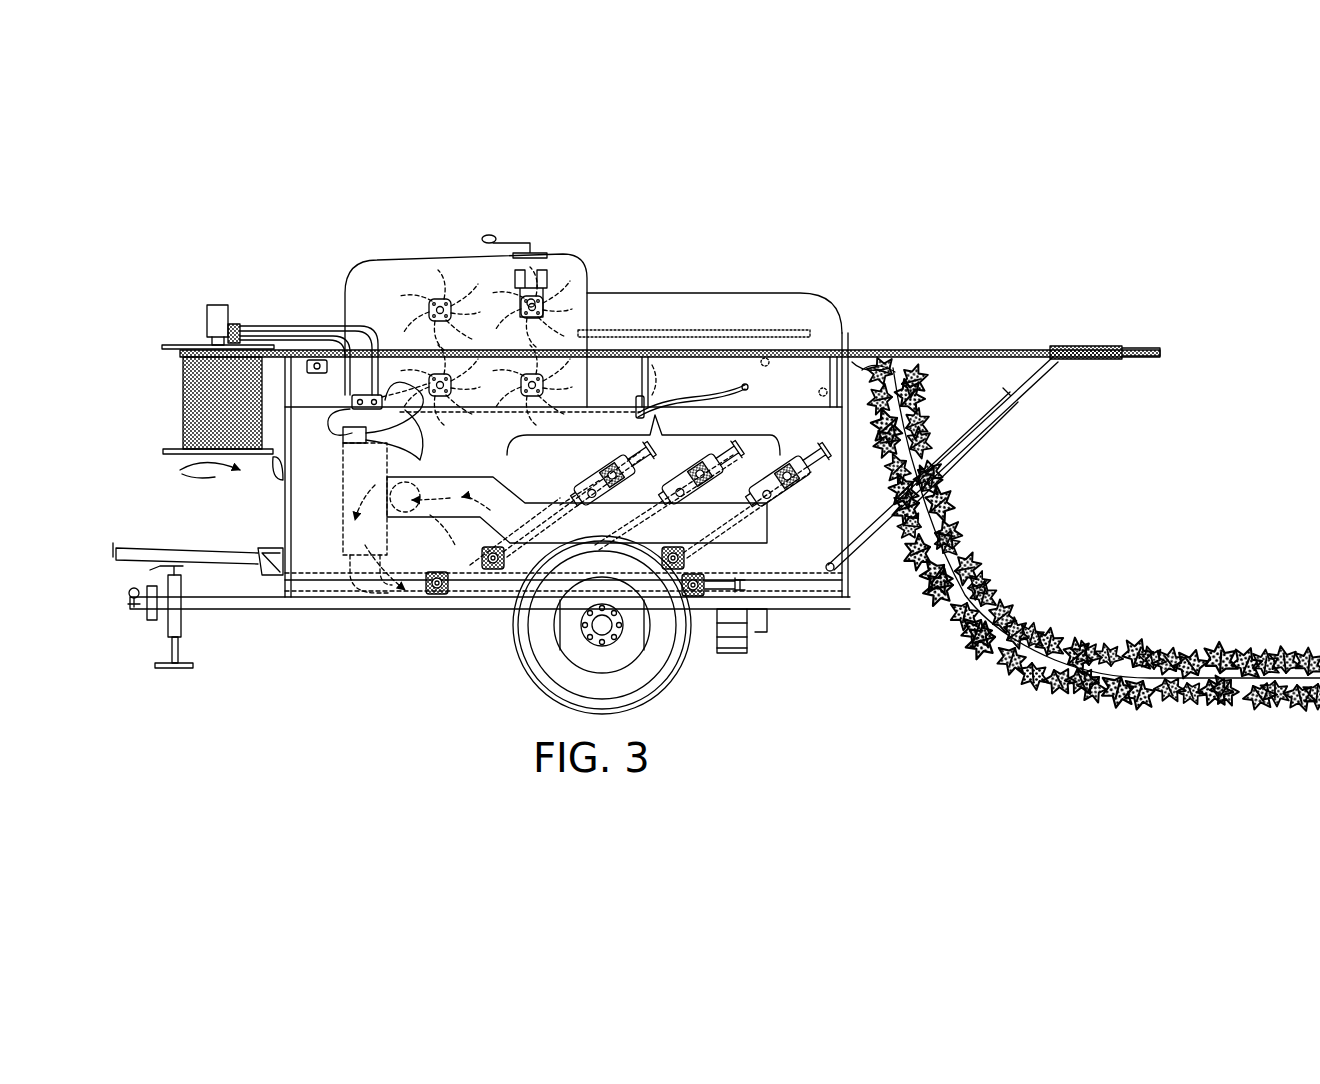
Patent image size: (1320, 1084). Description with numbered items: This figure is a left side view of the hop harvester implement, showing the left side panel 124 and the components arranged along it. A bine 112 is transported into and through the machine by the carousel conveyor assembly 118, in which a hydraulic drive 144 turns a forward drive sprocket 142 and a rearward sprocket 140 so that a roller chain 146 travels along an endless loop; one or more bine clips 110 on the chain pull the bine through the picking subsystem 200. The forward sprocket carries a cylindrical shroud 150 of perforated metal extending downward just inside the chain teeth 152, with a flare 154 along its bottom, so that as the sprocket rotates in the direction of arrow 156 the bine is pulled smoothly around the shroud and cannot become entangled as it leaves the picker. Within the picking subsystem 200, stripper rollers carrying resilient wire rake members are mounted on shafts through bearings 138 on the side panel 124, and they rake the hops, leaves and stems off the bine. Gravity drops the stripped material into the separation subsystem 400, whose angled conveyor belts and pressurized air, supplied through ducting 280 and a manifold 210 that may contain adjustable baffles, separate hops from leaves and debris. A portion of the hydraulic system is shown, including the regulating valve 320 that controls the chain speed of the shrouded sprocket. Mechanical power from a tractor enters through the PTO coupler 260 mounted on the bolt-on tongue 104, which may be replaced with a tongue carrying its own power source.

The tongue 104 is at (238, 612).
The bine clips 110 is at (870, 375).
The bine 112 is at (933, 518).
The carousel conveyor assembly 118 is at (1185, 363).
The left side panel 124 is at (760, 312).
The bearings 138 is at (437, 300).
The rearward sprocket 140 is at (1140, 348).
The forward drive sprocket 142 is at (186, 347).
The hydraulic drive 144 is at (217, 305).
The roller chain 146 is at (930, 350).
The cylindrical shroud 150 is at (182, 395).
The chain teeth 152 is at (162, 347).
The flare 154 is at (165, 450).
The direction of rotation arrow 156 is at (200, 486).
The picking subsystem 200 is at (372, 300).
The manifold 210 is at (427, 513).
The PTO coupler 260 is at (141, 548).
The ducting 280 is at (660, 420).
The regulating valve 320 is at (347, 443).
The separation subsystem 400 is at (750, 530).